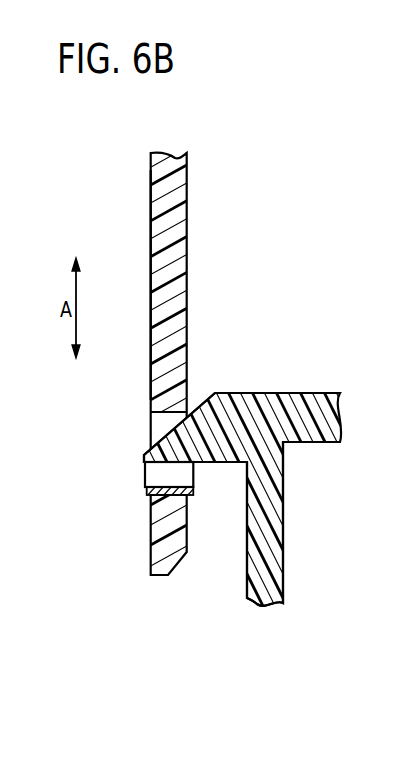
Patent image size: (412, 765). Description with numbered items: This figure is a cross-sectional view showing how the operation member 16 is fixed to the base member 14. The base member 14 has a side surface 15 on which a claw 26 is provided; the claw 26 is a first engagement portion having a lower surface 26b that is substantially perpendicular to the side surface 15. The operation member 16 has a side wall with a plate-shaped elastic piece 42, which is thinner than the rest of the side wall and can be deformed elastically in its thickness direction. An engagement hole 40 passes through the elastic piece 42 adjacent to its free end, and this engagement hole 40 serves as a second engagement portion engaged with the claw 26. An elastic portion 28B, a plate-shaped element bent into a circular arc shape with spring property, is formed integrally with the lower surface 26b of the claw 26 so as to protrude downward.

The operation member 16 is at (146, 196).
The elastic piece 42 is at (150, 273).
The engagement hole 40 is at (163, 422).
The base member 14 is at (266, 388).
The claw 26 is at (147, 451).
The lower surface 26b is at (158, 465).
The elastic portion 28B is at (146, 490).
The side surface 15 is at (248, 547).